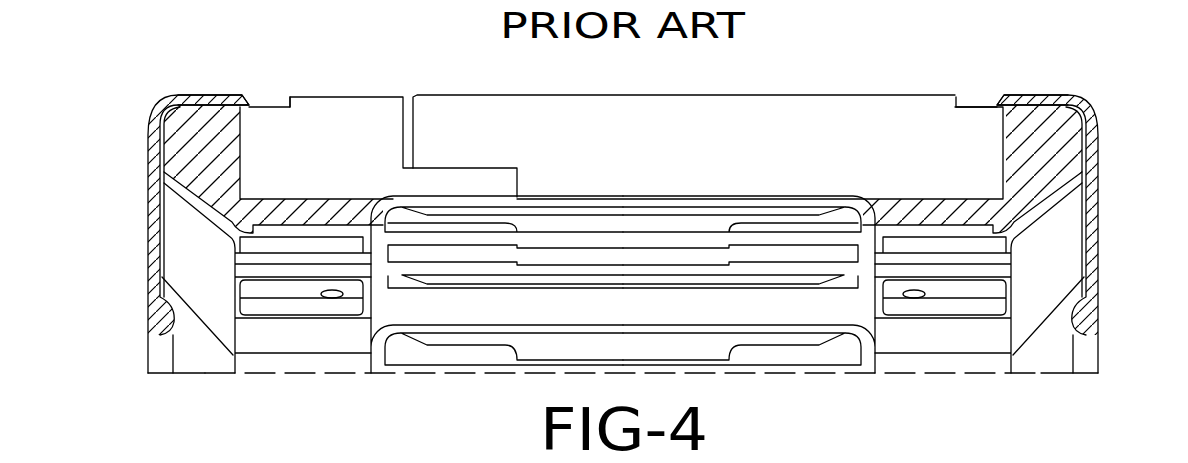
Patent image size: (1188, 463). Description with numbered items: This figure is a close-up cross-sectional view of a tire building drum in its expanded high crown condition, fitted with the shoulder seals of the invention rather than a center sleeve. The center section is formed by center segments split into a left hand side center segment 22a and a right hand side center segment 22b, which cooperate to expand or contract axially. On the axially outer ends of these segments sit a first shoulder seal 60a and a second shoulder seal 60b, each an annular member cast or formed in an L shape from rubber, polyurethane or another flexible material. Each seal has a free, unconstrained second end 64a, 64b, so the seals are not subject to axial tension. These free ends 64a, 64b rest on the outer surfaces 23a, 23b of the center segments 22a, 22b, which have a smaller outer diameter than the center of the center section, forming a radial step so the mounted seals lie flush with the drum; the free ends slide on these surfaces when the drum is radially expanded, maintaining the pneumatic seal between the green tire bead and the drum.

The first shoulder seal 60a is at (143, 243).
The second shoulder seal 60b is at (1103, 243).
The second end of first shoulder seal 64a is at (240, 99).
The second end of second shoulder seal 64b is at (1005, 99).
The outer surface of left hand center segment 23a is at (268, 106).
The outer surface of right hand center segment 23b is at (975, 106).
The left hand side center segment 22a is at (330, 168).
The right hand side center segment 22b is at (795, 168).